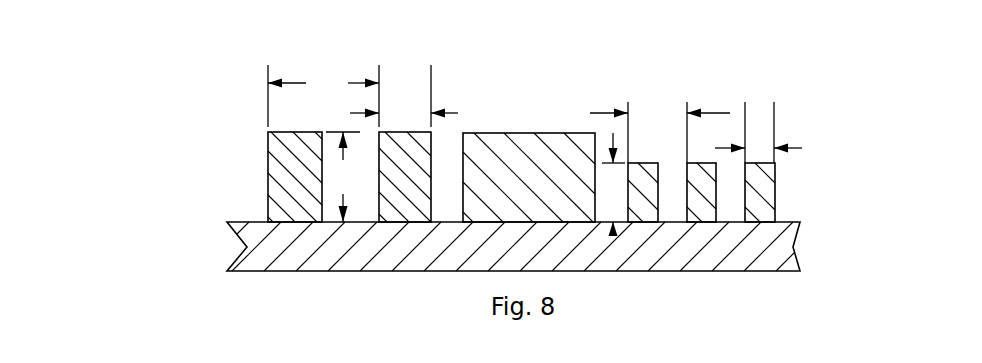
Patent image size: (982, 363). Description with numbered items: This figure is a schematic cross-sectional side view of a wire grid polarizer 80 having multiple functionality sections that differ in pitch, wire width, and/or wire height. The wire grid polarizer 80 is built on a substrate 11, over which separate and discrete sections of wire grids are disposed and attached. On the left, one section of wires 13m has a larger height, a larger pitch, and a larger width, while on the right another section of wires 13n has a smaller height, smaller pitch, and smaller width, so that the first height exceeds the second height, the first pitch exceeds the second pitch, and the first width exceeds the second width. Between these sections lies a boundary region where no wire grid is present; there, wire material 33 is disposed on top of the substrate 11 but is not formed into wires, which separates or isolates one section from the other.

The wire grid polarizer 80 is at (118, 217).
The substrate 11 is at (285, 262).
The section of wires 13m is at (288, 189).
The section of wires 13n is at (765, 209).
The wire material 33 is at (536, 141).